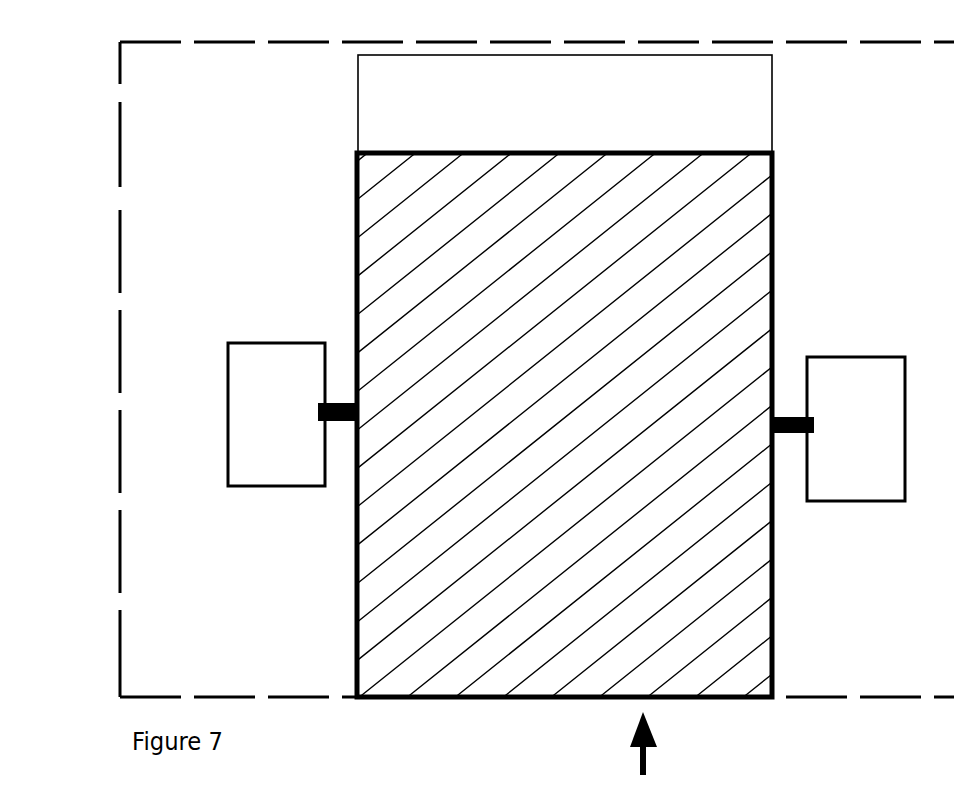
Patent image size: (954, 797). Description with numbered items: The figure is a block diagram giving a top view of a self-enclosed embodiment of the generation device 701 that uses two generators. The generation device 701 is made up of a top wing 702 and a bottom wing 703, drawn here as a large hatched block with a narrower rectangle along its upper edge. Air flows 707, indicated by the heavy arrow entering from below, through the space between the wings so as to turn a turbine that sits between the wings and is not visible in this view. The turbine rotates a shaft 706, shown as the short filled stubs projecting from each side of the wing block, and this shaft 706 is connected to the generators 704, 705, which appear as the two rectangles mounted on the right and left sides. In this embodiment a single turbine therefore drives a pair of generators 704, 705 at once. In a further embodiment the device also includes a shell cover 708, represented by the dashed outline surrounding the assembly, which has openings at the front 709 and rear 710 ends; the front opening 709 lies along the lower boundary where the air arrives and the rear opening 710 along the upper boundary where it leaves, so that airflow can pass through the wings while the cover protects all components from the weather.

The generation device 701 is at (571, 749).
The top wing 702 is at (760, 258).
The bottom wing 703 is at (775, 87).
The generator 704 is at (856, 454).
The generator 705 is at (276, 439).
The shaft 706 is at (344, 389).
The air flow 707 is at (662, 743).
The shell cover 708 is at (128, 108).
The front opening 709 is at (708, 715).
The rear opening 710 is at (622, 34).